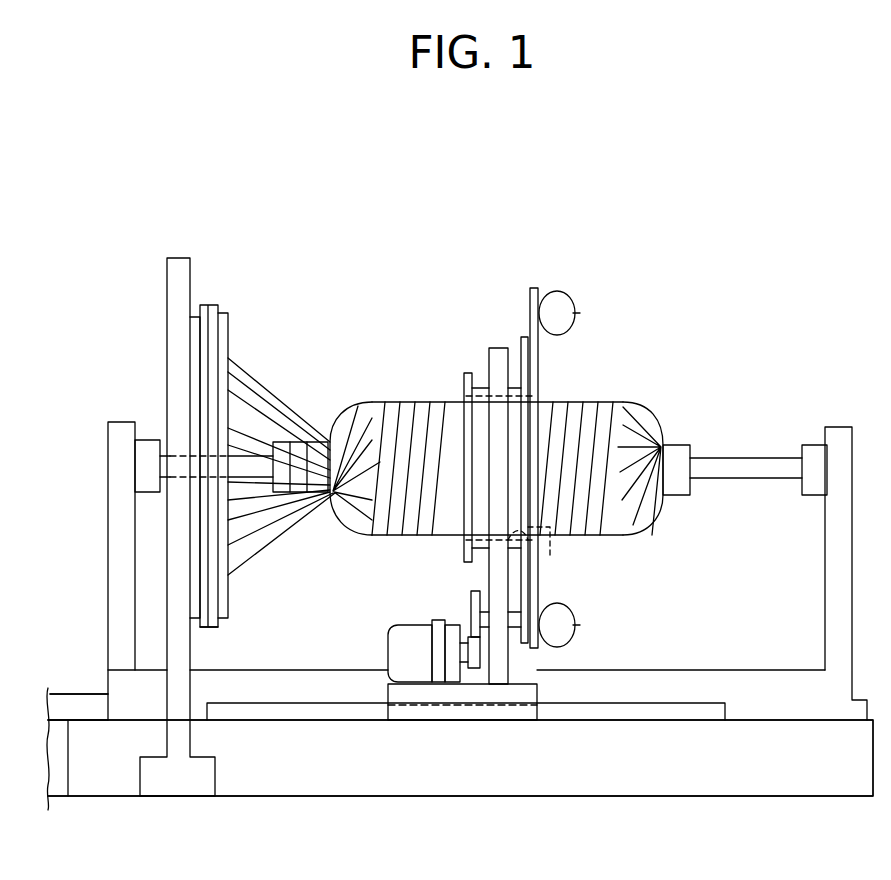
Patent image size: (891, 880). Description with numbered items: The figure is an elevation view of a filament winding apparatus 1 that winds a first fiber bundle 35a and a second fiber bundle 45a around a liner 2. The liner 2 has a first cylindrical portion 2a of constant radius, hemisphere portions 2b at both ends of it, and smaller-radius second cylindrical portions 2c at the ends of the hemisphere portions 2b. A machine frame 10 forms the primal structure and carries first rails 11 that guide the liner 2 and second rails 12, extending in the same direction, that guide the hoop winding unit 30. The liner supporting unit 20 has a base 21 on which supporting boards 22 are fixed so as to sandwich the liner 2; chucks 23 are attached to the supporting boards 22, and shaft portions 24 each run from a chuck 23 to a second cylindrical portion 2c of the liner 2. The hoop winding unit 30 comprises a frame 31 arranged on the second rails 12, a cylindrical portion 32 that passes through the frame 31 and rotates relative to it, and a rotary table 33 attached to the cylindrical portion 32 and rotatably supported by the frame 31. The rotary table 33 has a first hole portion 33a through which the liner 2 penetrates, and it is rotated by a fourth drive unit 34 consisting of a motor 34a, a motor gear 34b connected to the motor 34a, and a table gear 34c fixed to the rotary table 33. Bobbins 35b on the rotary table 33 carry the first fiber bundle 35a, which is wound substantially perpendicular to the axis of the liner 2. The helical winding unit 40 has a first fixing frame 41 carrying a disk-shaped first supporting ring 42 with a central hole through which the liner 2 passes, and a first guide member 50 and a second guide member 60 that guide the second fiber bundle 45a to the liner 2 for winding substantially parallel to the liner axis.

The filament winding apparatus 1 is at (93, 150).
The liner 2 is at (637, 327).
The first cylindrical portion 2a is at (580, 416).
The hemisphere portion 2b is at (354, 412).
The second cylindrical portion 2c is at (312, 442).
The machine frame 10 is at (262, 777).
The first rail 11 is at (88, 700).
The second rail 12 is at (318, 710).
The liner supporting unit 20 is at (72, 424).
The base 21 is at (775, 705).
The supporting board 22 is at (122, 430).
The chuck 23 is at (146, 440).
The shaft portion 24 is at (180, 478).
The hoop winding unit 30 is at (462, 268).
The frame 31 is at (500, 350).
The cylindrical portion 32 is at (472, 375).
The rotary table 33 is at (535, 290).
The first hole portion 33a is at (549, 542).
The fourth drive unit 34 is at (344, 562).
The motor 34a is at (412, 632).
The motor gear 34b is at (476, 606).
The table gear 34c is at (526, 345).
The first fiber bundle 35a is at (395, 440).
The bobbin 35b is at (571, 313).
The helical winding unit 40 is at (237, 201).
The first fixing frame 41 is at (176, 262).
The first supporting ring 42 is at (195, 317).
The second fiber bundle 45a is at (256, 383).
The first guide member 50 is at (205, 306).
The second guide member 60 is at (212, 628).